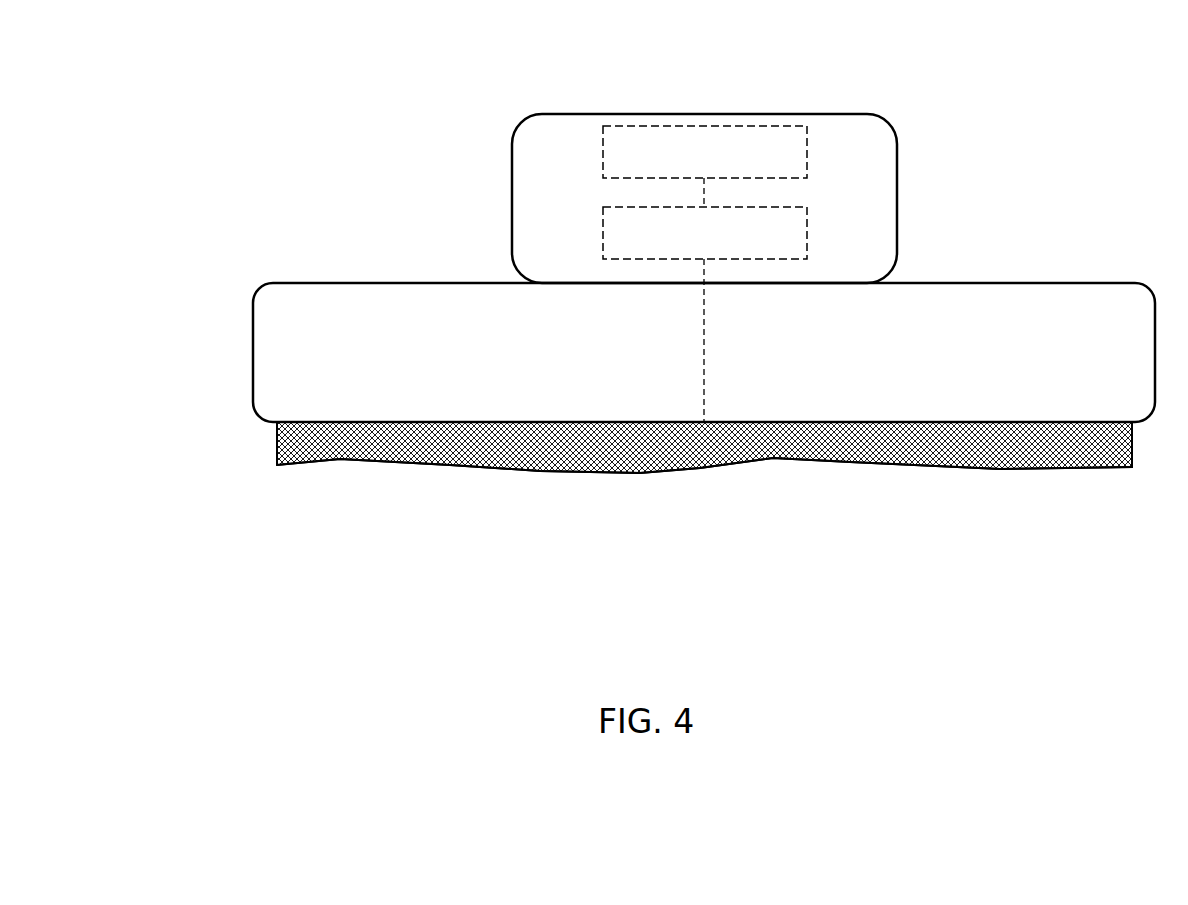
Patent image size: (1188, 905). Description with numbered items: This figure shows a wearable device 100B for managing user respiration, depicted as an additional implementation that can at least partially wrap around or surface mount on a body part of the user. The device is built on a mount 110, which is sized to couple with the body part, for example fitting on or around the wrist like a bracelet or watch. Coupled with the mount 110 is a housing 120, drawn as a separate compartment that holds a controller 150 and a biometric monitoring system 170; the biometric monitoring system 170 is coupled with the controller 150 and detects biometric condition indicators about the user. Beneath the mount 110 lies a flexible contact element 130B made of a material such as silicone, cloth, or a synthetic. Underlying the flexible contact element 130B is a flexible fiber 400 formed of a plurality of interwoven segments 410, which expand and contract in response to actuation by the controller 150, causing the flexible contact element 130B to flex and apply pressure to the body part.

The wearable device 100B is at (268, 106).
The mount 110 is at (275, 343).
The housing 120 is at (503, 163).
The flexible contact element 130B is at (350, 470).
The controller 150 is at (705, 314).
The biometric monitoring system 170 is at (705, 166).
The flexible fiber 400 is at (957, 416).
The interwoven segments 410 is at (567, 437).